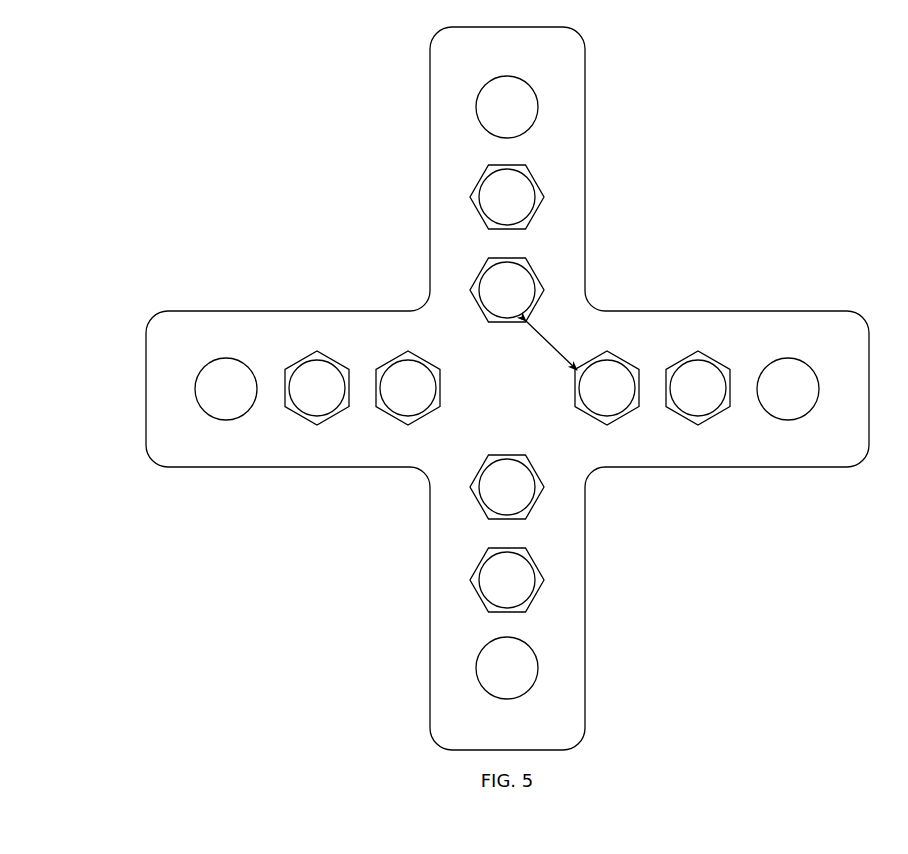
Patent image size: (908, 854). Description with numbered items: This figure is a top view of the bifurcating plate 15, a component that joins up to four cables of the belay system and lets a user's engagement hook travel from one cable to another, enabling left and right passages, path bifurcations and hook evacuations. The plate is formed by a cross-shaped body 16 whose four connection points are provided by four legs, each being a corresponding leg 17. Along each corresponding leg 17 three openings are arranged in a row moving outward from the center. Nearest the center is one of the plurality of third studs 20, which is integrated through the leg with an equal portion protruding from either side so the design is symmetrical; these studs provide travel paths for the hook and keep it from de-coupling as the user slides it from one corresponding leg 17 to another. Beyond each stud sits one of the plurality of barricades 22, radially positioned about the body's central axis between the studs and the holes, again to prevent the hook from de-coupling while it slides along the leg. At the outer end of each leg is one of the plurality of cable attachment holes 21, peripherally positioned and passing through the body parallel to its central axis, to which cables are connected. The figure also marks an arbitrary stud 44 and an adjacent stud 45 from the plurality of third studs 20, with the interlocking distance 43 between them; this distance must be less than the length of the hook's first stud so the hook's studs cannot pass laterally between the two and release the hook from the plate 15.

The bifurcating plate 15 is at (113, 103).
The cross-shaped body 16 is at (518, 436).
The corresponding leg 17 is at (232, 290).
The plurality of third studs 20 is at (415, 371).
The plurality of cable attachment holes 21 is at (507, 76).
The plurality of barricades 22 is at (523, 185).
The interlocking distance 43 is at (546, 343).
The arbitrary stud 44 is at (508, 268).
The adjacent stud 45 is at (615, 369).